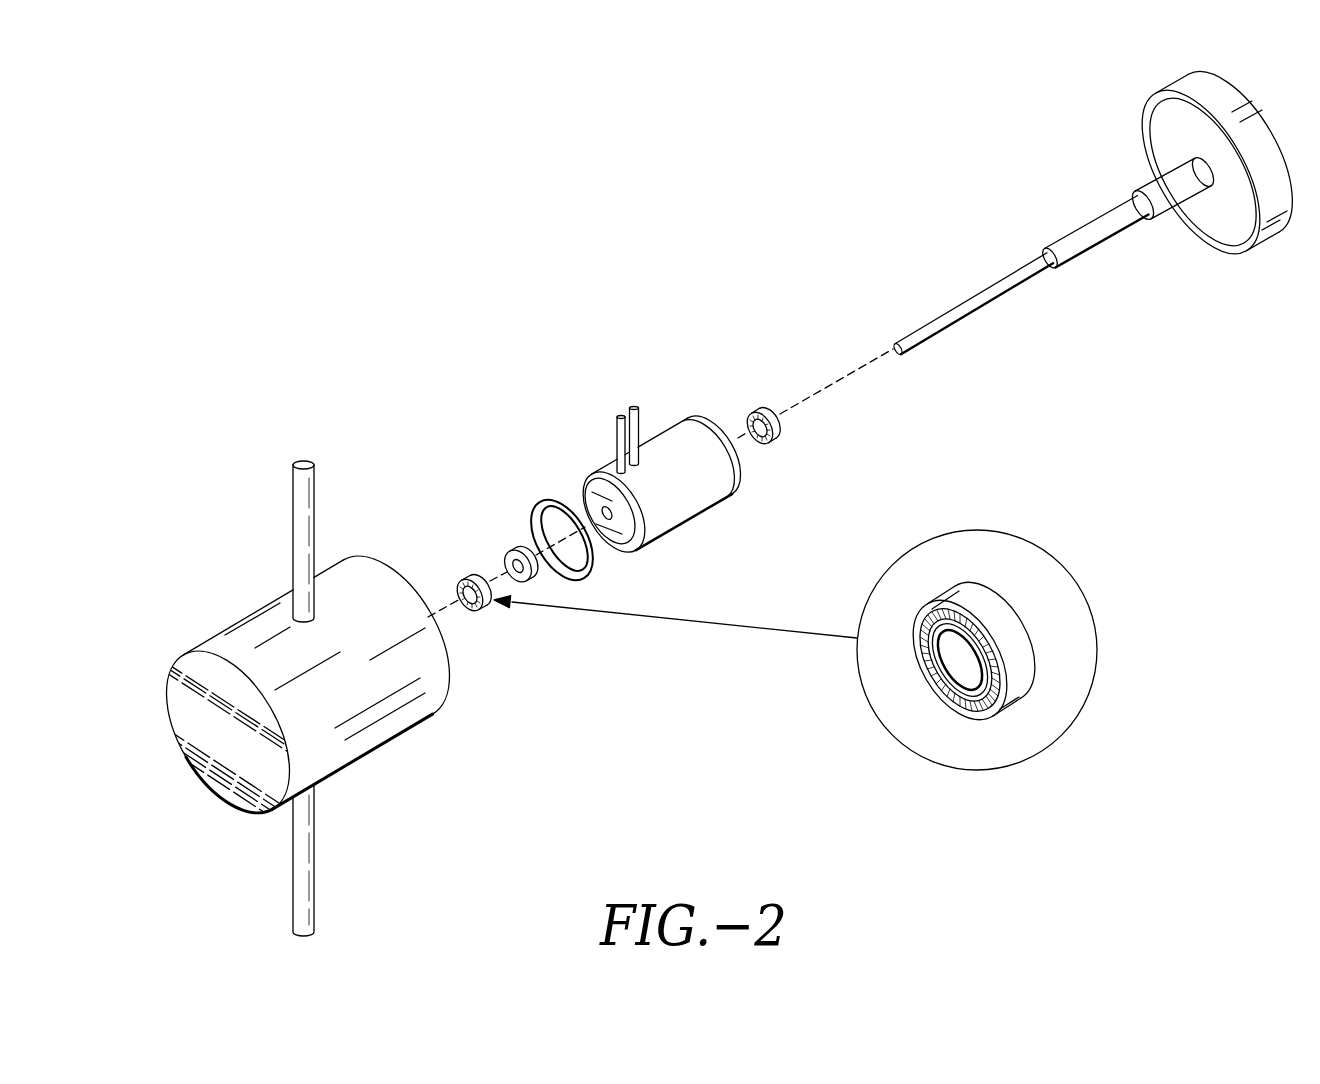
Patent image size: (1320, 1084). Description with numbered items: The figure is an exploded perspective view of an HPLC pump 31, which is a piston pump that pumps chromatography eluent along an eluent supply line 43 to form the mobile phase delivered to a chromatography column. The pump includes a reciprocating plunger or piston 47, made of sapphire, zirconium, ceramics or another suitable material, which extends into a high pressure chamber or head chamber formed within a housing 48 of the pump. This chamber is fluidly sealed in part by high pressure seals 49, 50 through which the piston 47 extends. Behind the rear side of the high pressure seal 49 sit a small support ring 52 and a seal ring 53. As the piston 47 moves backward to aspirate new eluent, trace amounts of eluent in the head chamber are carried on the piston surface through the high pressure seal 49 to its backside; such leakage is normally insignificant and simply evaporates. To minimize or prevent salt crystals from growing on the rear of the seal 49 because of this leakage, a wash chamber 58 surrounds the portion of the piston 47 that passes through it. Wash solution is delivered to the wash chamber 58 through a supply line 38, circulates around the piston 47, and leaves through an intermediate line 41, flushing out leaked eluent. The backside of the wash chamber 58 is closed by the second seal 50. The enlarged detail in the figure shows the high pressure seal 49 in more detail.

The HPLC pump 31 is at (484, 288).
The supply line 38 is at (616, 443).
The intermediate line 41 is at (639, 432).
The eluent supply line 43 is at (307, 860).
The piston 47 is at (932, 326).
The housing 48 is at (355, 730).
The high pressure seal 49 is at (461, 580).
The second seal 50 is at (757, 414).
The small support ring 52 is at (510, 551).
The seal ring 53 is at (540, 505).
The wash chamber 58 is at (677, 436).